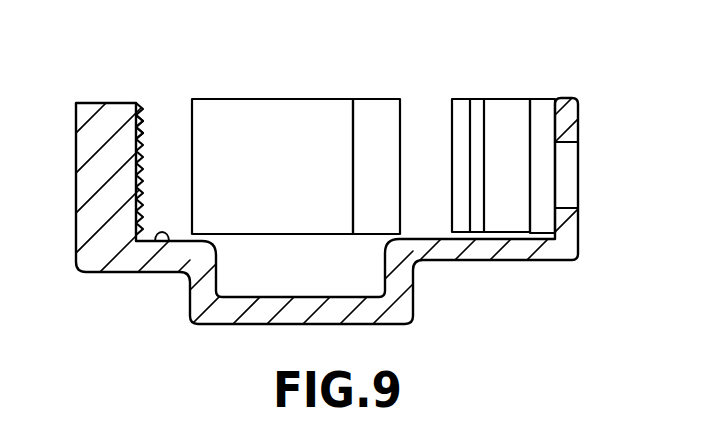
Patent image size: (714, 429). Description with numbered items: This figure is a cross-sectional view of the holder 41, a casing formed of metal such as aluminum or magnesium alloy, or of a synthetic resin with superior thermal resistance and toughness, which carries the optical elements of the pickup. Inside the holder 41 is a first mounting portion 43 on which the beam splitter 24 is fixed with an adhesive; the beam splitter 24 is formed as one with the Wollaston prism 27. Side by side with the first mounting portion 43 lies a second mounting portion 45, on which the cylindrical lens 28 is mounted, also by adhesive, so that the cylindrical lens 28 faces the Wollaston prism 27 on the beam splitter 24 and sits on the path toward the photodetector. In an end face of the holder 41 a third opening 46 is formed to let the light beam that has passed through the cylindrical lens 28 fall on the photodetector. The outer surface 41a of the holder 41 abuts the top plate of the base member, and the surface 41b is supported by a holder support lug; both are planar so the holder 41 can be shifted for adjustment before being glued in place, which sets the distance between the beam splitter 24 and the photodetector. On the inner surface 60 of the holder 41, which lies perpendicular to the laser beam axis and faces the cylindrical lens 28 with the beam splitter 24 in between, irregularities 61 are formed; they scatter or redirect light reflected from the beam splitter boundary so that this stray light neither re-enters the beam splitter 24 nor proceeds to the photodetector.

The beam splitter 24 is at (268, 107).
The Wollaston prism 27 is at (377, 105).
The cylindrical lens 28 is at (505, 107).
The holder 41 is at (578, 108).
The surface of the holder 41a is at (98, 102).
The surface of the holder 41b is at (108, 272).
The first mounting portion 43 is at (160, 242).
The second mounting portion 45 is at (542, 108).
The third opening 46 is at (577, 198).
The inner surface of the holder 60 is at (137, 104).
The irregularities 61 is at (141, 128).